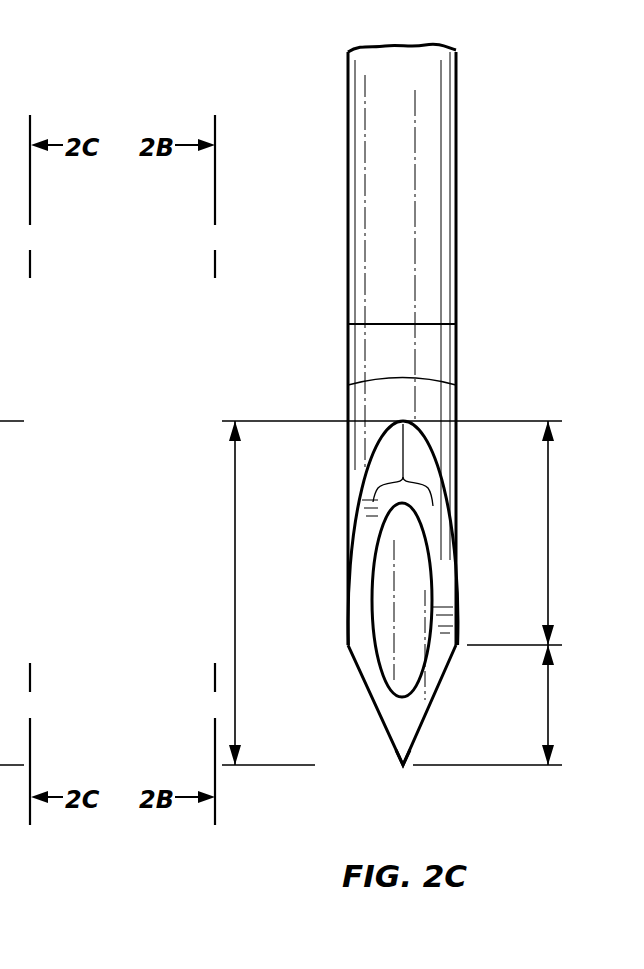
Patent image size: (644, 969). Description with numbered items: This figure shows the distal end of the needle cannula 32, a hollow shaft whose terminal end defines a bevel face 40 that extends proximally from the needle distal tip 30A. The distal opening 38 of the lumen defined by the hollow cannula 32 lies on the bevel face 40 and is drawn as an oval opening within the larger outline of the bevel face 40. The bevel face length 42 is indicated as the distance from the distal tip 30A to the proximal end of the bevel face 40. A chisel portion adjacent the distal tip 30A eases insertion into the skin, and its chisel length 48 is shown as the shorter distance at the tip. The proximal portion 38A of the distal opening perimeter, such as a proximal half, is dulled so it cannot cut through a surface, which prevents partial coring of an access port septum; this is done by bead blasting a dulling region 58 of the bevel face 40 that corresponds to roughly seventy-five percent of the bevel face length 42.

The cannula 32 is at (380, 132).
The proximal portion of the distal opening perimeter 38A is at (410, 420).
The bevel face 40 is at (440, 515).
The distal opening 38 is at (376, 574).
The bevel face length 42 is at (235, 583).
The dulling region 58 is at (548, 535).
The chisel length 48 is at (548, 705).
The needle distal tip 30A is at (402, 766).